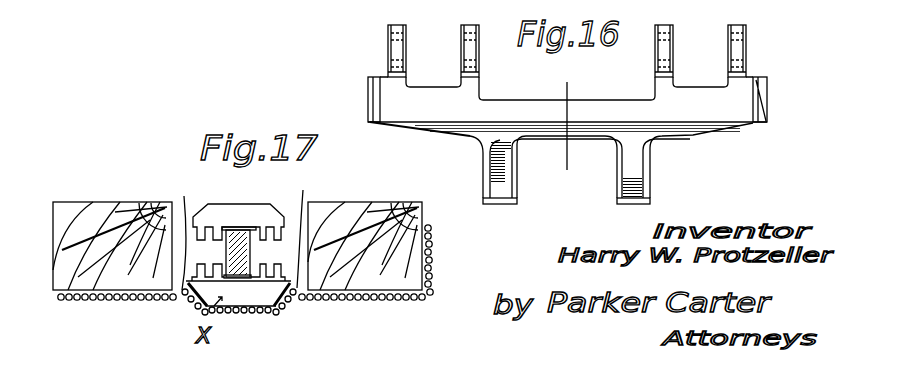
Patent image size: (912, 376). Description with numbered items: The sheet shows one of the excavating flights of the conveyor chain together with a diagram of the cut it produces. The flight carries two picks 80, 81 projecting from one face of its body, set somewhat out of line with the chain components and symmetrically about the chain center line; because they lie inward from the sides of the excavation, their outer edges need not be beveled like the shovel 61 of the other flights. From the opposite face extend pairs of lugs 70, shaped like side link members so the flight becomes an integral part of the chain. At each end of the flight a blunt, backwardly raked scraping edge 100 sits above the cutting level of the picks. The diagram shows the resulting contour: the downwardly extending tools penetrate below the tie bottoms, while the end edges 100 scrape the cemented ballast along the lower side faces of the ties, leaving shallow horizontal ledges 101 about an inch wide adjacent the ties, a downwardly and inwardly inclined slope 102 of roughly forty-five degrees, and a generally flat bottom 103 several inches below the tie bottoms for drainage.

In FIG. 17, the shovel 61 is at (240, 211).
In FIG. 16, the lugs 70 is at (461, 33).
In FIG. 16, the pick 80 is at (493, 184).
In FIG. 16, the pick 81 is at (638, 184).
In FIG. 16, the scraping edge 100 is at (370, 78).
In FIG. 17, the scraping edge 100 is at (183, 296).
In FIG. 17, the horizontal ledges 101 is at (237, 231).
In FIG. 17, the inclined slope 102 is at (193, 305).
In FIG. 17, the flat bottom 103 is at (270, 303).